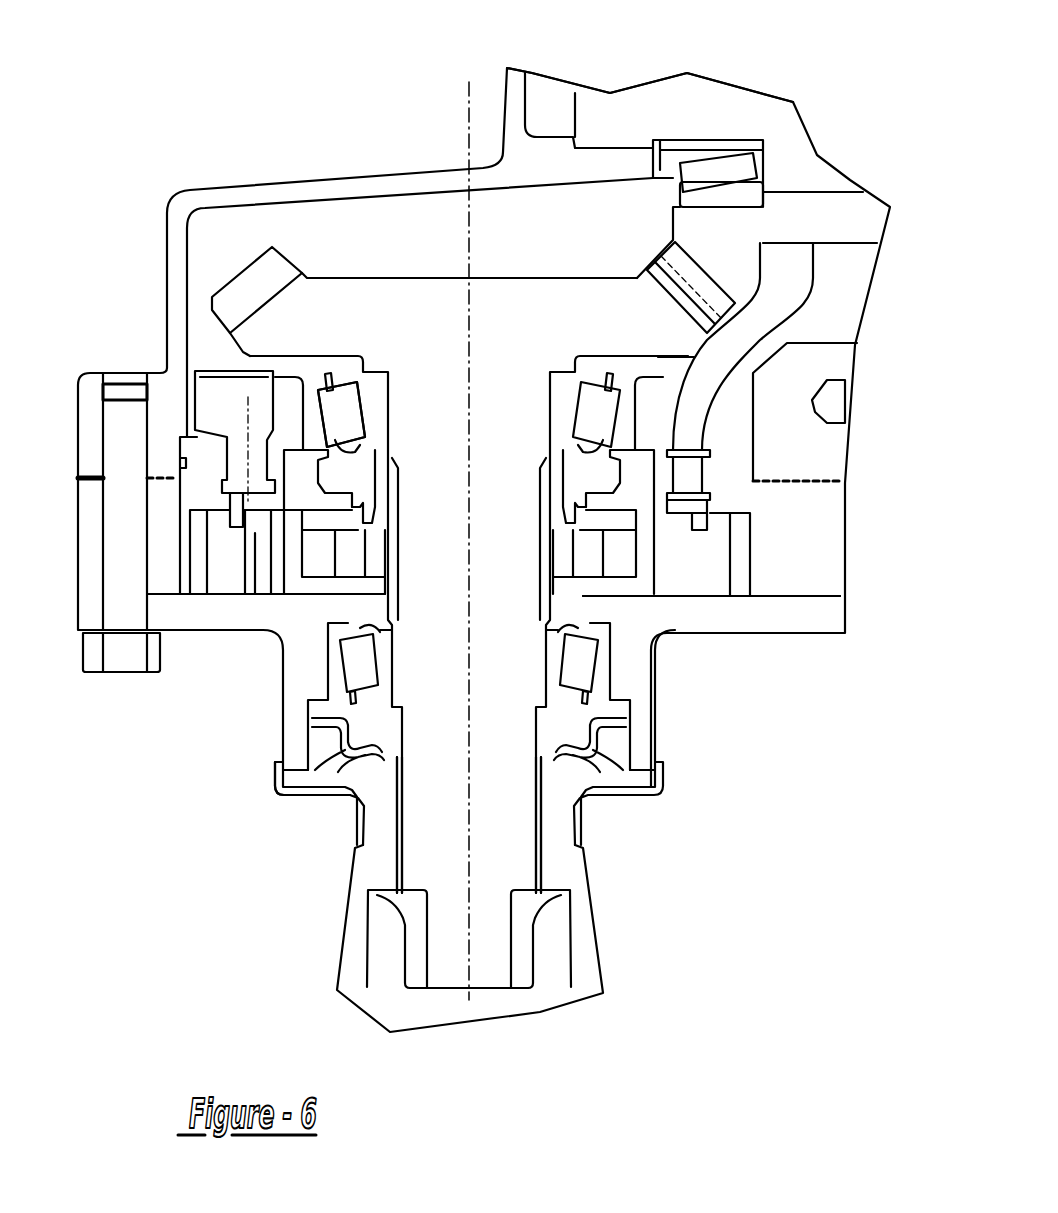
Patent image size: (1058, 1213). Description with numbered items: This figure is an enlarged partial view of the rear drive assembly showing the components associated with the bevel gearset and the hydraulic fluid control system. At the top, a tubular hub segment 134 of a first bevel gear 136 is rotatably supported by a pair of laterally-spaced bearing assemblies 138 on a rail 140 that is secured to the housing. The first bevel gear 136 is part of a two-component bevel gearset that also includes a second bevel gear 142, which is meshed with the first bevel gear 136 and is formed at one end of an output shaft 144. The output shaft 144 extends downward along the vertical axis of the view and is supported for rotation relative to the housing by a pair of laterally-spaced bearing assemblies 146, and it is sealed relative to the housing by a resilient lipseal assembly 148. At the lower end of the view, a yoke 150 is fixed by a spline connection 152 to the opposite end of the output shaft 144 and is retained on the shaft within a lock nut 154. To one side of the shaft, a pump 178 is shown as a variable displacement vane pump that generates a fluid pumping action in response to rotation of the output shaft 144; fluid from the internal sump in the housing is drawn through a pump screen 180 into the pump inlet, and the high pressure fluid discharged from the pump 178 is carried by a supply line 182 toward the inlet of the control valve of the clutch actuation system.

The tubular hub segment 134 is at (847, 200).
The first bevel gear 136 is at (703, 220).
The bearing assemblies 138 is at (682, 180).
The rail 140 is at (680, 103).
The second bevel gear 142 is at (275, 263).
The output shaft 144 is at (433, 847).
The bearing assemblies 146 is at (357, 407).
The resilient lipseal assembly 148 is at (320, 793).
The yoke 150 is at (587, 937).
The spline connection 152 is at (530, 862).
The lock nut 154 is at (517, 957).
The pump 178 is at (663, 597).
The pump screen 180 is at (225, 366).
The supply line 182 is at (763, 328).